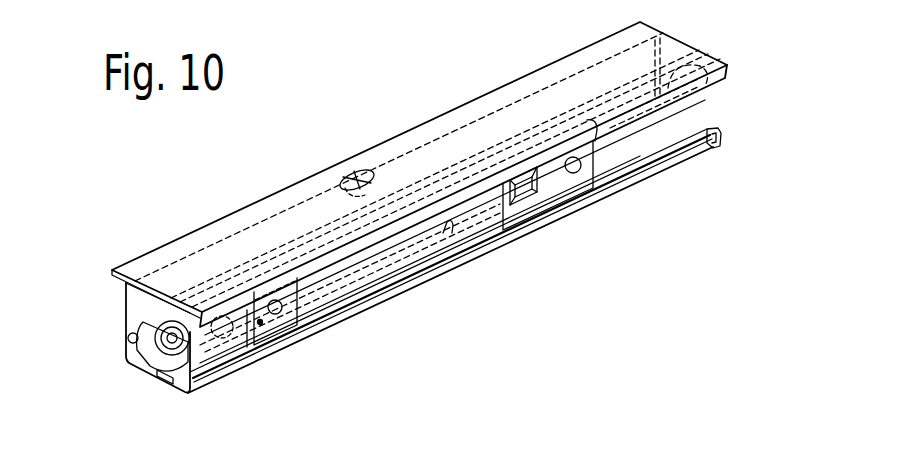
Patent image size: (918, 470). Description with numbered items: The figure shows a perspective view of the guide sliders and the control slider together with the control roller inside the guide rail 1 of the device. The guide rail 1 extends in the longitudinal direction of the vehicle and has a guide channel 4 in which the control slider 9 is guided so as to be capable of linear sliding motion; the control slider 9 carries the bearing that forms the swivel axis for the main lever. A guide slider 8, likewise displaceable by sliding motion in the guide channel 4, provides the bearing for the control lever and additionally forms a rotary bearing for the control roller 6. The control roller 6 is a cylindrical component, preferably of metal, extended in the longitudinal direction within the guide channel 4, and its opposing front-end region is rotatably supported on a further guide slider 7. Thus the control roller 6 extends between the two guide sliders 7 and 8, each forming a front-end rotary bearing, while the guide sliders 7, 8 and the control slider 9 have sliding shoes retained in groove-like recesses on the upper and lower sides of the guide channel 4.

The guide rail 1 is at (438, 128).
The guide channel 4 is at (658, 137).
The control roller 6 is at (392, 247).
The guide slider 7 is at (232, 360).
The guide slider 8 is at (565, 205).
The control slider 9 is at (274, 321).